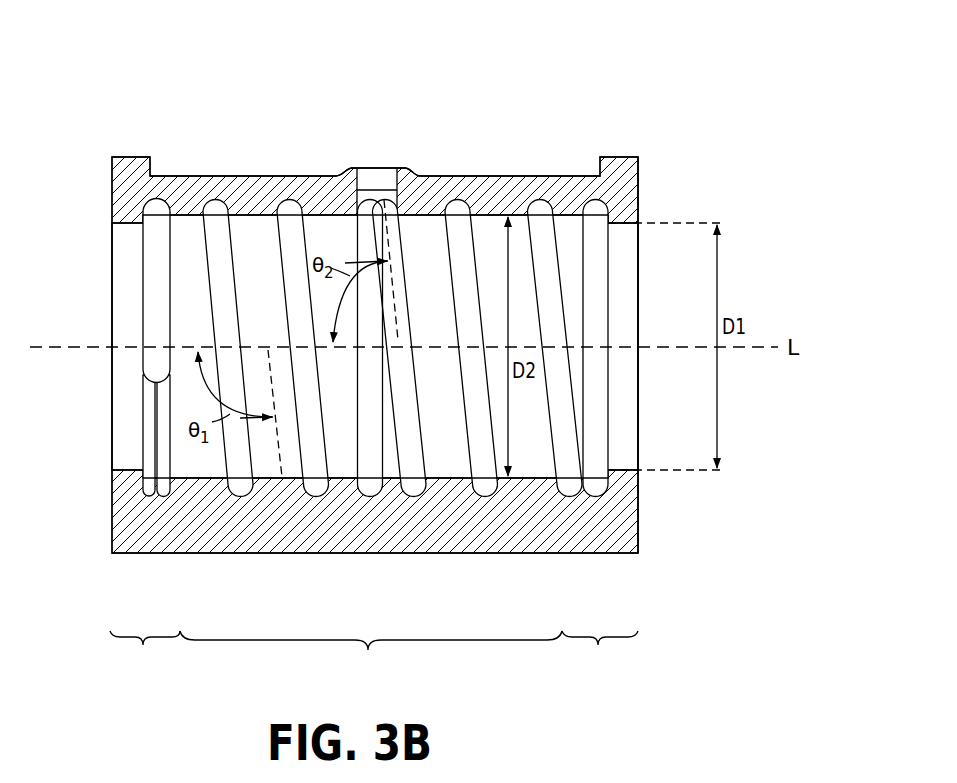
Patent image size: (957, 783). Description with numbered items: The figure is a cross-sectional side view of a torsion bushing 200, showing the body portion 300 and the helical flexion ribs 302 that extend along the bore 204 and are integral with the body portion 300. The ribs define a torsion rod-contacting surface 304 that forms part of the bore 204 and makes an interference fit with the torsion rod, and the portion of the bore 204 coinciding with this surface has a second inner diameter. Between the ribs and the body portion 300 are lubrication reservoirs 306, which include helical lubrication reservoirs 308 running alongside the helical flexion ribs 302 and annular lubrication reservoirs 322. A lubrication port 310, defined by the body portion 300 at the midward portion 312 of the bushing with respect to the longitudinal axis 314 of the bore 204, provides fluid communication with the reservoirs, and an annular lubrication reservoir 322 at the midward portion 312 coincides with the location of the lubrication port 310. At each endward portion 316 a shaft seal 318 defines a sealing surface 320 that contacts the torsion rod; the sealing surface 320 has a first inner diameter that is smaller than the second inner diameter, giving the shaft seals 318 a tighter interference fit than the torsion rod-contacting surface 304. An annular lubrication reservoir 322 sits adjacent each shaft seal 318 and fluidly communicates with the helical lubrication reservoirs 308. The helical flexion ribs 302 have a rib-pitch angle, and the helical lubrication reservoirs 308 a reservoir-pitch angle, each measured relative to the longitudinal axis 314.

The torsion bushing 200 is at (592, 66).
The bore 204 is at (641, 305).
The body portion 300 is at (317, 209).
The helical flexion ribs 302 is at (309, 210).
The torsion rod-contacting surface 304 is at (316, 216).
The lubrication reservoirs 306 is at (222, 294).
The helical lubrication reservoirs 308 is at (316, 497).
The lubrication port 310 is at (373, 180).
The midward portion 312 is at (368, 650).
The longitudinal axis 314 is at (695, 349).
The endward portions 316 is at (143, 645).
The shaft seals 318 is at (124, 216).
The sealing surface 320 is at (617, 225).
The annular lubrication reservoirs 322 is at (150, 496).